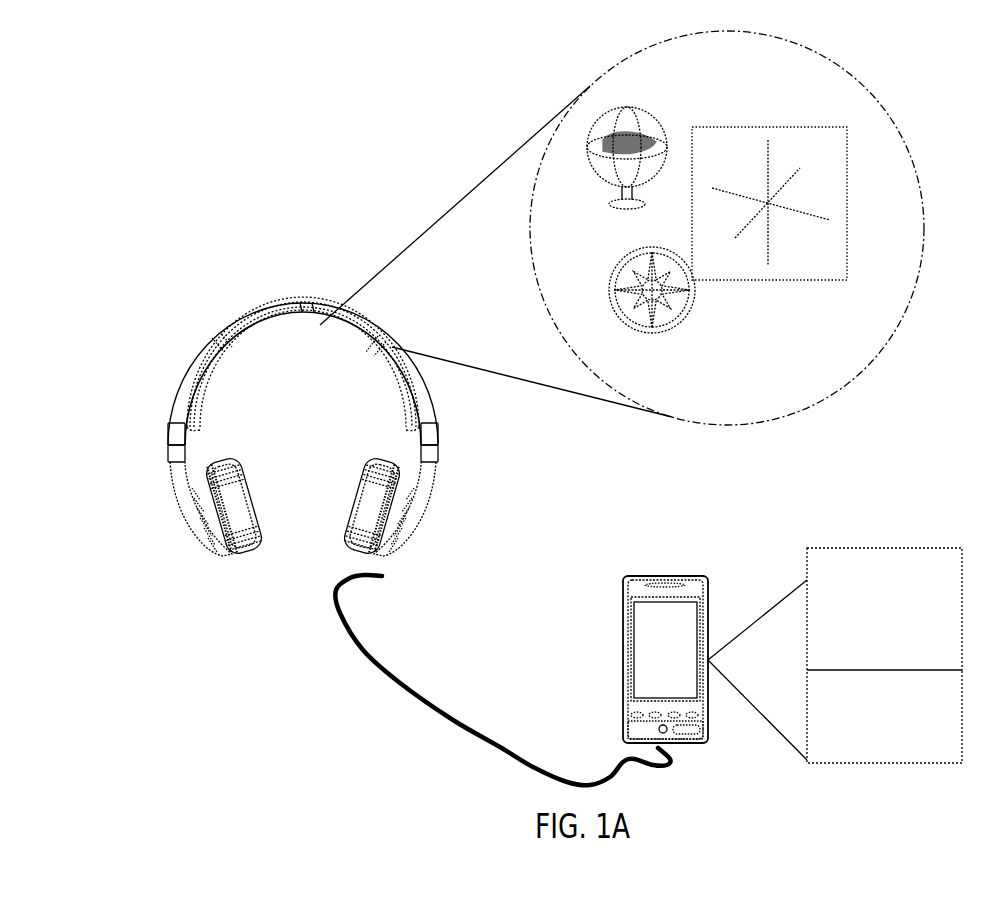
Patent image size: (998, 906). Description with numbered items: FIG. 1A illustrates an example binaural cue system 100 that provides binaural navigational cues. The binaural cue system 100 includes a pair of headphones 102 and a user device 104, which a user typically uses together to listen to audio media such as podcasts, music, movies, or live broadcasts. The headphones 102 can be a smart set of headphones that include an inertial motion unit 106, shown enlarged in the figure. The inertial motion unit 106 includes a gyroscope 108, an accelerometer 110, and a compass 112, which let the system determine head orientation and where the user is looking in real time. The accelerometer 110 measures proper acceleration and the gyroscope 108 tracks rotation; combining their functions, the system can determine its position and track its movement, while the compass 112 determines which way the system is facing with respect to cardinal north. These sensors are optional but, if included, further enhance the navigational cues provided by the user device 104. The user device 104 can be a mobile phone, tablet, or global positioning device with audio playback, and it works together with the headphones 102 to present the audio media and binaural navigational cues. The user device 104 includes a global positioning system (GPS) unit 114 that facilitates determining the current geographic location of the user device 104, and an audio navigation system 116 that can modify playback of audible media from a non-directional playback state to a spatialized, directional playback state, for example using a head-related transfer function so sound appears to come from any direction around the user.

The binaural cue system 100 is at (122, 71).
The headphones 102 is at (210, 345).
The user device 104 is at (665, 576).
The inertial motion unit 106 is at (893, 120).
The gyroscope 108 is at (645, 112).
The accelerometer 110 is at (760, 127).
The compass 112 is at (686, 326).
The global positioning system (GPS) unit 114 is at (884, 716).
The audio navigation system 116 is at (884, 609).